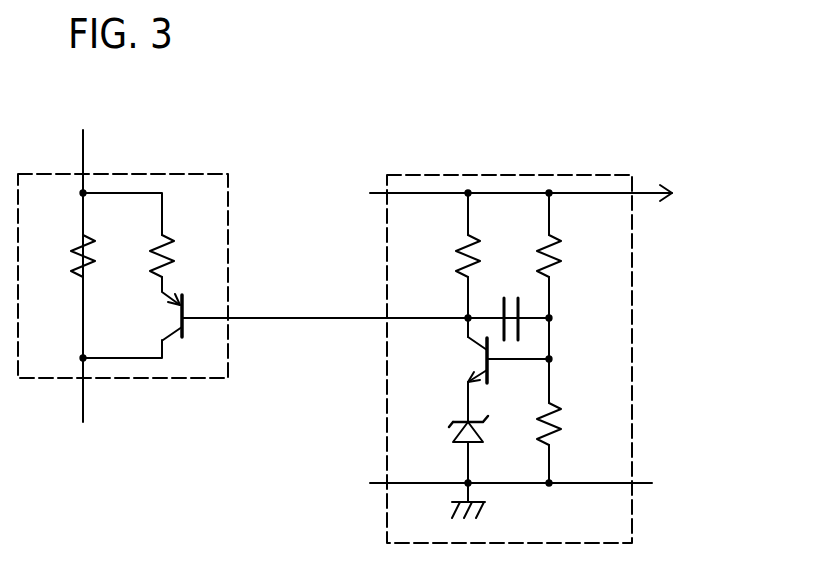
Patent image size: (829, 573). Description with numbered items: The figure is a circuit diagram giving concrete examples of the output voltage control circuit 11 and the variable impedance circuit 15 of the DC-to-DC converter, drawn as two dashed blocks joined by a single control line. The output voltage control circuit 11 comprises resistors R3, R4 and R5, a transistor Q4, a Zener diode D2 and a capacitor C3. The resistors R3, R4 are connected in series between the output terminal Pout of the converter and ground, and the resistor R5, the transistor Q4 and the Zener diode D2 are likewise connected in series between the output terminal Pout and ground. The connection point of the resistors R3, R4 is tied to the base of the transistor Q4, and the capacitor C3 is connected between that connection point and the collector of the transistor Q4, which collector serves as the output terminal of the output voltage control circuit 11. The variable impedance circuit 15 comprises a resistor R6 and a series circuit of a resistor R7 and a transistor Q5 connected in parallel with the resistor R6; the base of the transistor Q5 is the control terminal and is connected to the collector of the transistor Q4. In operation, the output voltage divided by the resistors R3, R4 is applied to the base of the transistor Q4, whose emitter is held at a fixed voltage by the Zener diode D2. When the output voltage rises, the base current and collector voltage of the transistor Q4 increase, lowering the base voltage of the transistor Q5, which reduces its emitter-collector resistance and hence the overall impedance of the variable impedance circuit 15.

The variable impedance circuit 15 is at (162, 173).
The output voltage control circuit 11 is at (494, 174).
The resistor R6 is at (62, 256).
The resistor R7 is at (183, 256).
The transistor Q5 is at (152, 308).
The resistor R5 is at (446, 256).
The resistor R3 is at (570, 256).
The capacitor C3 is at (511, 304).
The transistor Q4 is at (491, 360).
The Zener diode D2 is at (449, 431).
The resistor R4 is at (572, 424).
The output terminal Pout is at (717, 195).